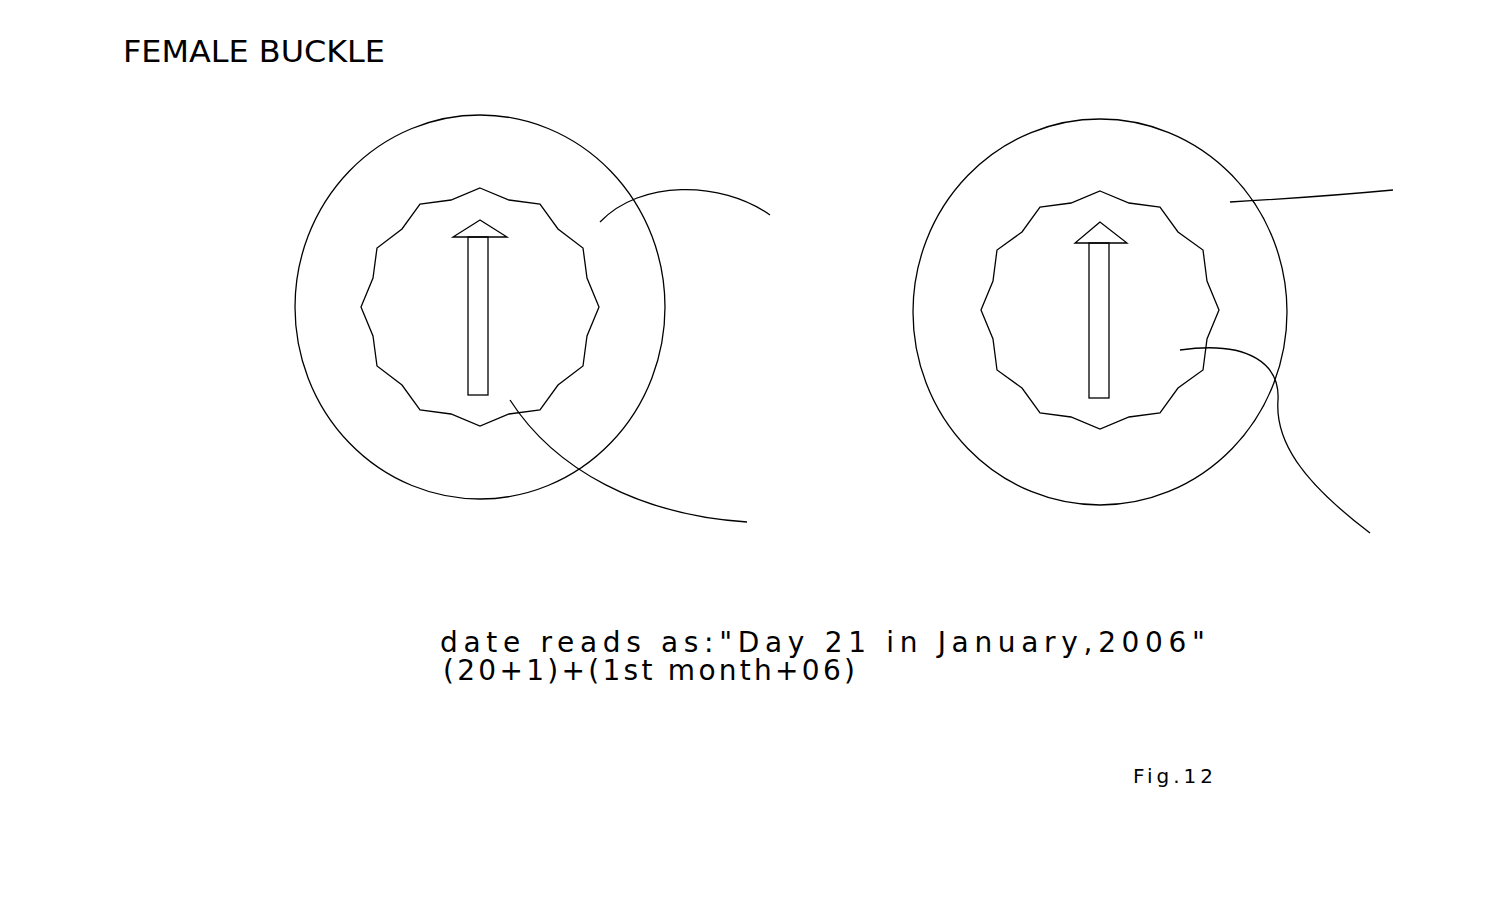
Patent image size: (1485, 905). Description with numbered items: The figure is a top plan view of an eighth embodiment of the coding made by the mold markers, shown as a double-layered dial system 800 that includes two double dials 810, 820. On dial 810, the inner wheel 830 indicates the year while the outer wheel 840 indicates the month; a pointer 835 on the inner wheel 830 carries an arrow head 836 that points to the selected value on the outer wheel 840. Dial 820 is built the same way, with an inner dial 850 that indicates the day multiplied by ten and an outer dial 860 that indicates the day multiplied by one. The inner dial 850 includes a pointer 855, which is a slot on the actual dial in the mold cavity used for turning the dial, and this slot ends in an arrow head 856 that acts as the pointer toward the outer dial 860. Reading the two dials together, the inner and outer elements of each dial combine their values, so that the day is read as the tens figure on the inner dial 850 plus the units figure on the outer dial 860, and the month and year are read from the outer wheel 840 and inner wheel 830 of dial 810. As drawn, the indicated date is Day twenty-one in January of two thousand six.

The double-layered dial system 800 is at (925, 52).
The dial 810 is at (1243, 153).
The dial 820 is at (625, 150).
The inner wheel 830 is at (1190, 328).
The pointer 835 is at (1093, 265).
The arrow head 836 is at (1108, 227).
The outer wheel 840 is at (1263, 280).
The inner dial 850 is at (555, 362).
The pointer 855 is at (470, 263).
The arrow head 856 is at (487, 227).
The outer dial 860 is at (655, 296).